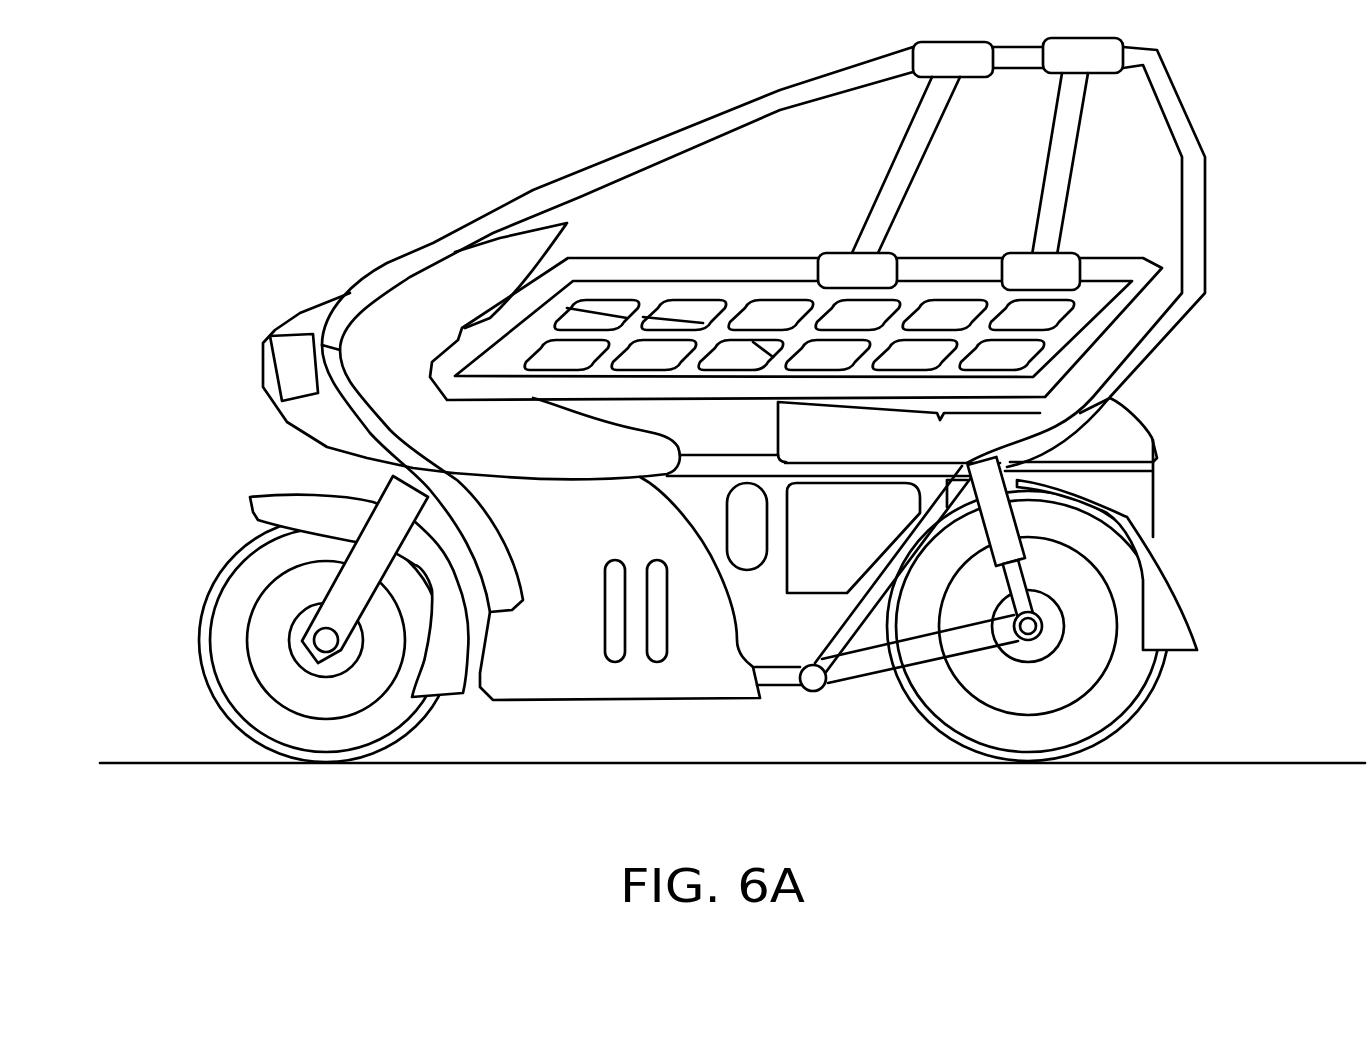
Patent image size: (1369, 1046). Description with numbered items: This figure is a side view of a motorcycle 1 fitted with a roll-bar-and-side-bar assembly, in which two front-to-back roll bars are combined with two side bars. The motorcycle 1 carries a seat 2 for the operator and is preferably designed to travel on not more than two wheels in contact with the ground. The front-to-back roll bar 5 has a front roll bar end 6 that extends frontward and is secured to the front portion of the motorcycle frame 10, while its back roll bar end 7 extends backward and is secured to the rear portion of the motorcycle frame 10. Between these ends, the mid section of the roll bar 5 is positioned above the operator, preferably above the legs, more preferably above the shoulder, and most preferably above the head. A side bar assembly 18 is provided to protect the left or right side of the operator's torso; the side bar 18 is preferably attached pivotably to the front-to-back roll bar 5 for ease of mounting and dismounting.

The motorcycle 1 is at (713, 438).
The seat 2 is at (915, 450).
The front-to-back roll bar 5 is at (535, 194).
The front roll bar end 6 is at (526, 595).
The back roll bar end 7 is at (1008, 467).
The motorcycle frame 10 is at (826, 643).
The side bar assembly 18 is at (693, 260).